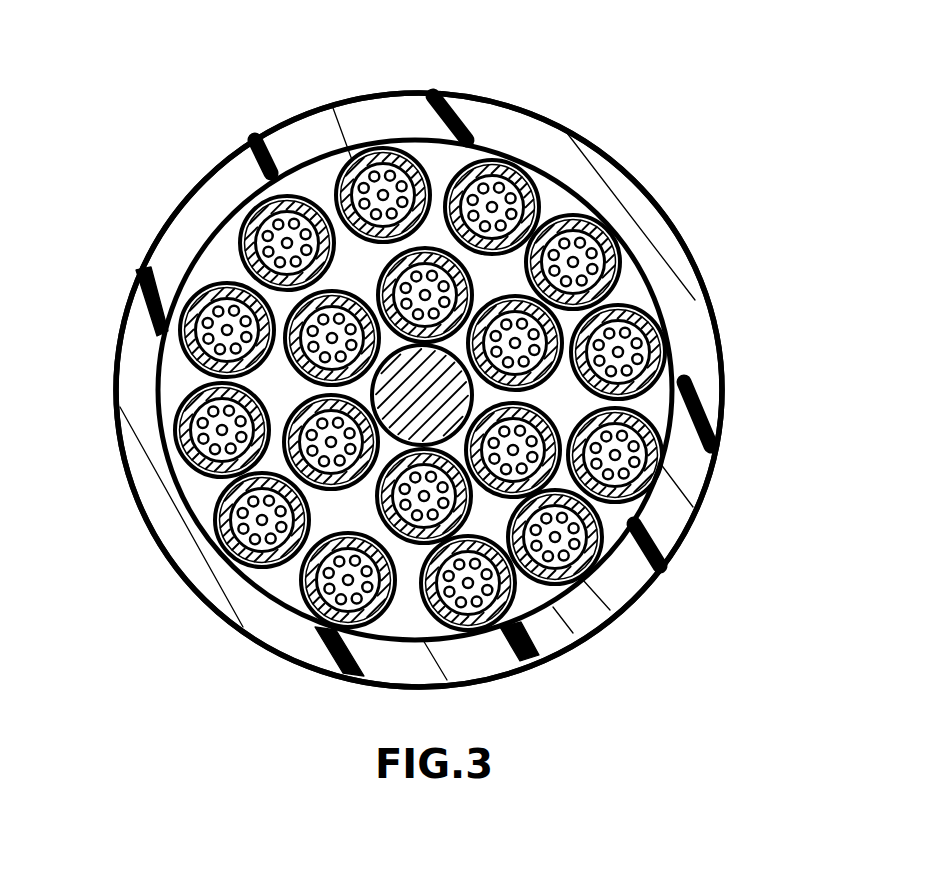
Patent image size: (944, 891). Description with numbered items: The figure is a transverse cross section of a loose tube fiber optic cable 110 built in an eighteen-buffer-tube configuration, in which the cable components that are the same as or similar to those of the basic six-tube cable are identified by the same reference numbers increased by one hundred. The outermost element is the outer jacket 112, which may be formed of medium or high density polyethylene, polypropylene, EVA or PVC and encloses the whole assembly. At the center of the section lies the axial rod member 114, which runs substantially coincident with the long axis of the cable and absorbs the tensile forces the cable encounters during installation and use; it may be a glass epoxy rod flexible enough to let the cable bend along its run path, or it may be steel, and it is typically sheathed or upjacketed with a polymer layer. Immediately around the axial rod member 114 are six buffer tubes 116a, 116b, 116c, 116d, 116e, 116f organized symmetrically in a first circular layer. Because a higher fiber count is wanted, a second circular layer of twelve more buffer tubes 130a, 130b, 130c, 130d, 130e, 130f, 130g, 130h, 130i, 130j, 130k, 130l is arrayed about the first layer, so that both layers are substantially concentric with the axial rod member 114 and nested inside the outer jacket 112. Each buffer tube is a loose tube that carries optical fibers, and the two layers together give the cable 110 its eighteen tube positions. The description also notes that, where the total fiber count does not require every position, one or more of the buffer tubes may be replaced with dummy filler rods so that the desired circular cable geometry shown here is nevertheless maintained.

The loose tube fiber optic cable 110 is at (690, 211).
The outer jacket 112 is at (407, 90).
The axial rod member 114 is at (399, 351).
The buffer tube 116a is at (540, 220).
The buffer tube 116b is at (565, 312).
The buffer tube 116c is at (570, 402).
The buffer tube 116d is at (578, 648).
The buffer tube 116e is at (268, 462).
The buffer tube 116f is at (287, 313).
The buffer tube 130a is at (500, 162).
The buffer tube 130b is at (591, 218).
The buffer tube 130c is at (665, 350).
The buffer tube 130d is at (657, 463).
The buffer tube 130e is at (634, 542).
The buffer tube 130f is at (483, 632).
The buffer tube 130g is at (313, 607).
The buffer tube 130h is at (240, 578).
The buffer tube 130i is at (177, 432).
The buffer tube 130j is at (177, 328).
The buffer tube 130k is at (252, 212).
The buffer tube 130l is at (350, 168).